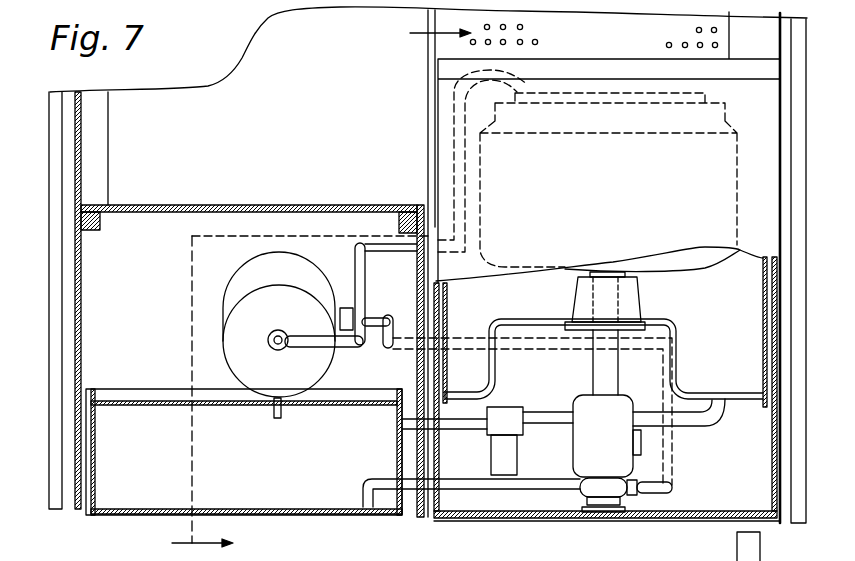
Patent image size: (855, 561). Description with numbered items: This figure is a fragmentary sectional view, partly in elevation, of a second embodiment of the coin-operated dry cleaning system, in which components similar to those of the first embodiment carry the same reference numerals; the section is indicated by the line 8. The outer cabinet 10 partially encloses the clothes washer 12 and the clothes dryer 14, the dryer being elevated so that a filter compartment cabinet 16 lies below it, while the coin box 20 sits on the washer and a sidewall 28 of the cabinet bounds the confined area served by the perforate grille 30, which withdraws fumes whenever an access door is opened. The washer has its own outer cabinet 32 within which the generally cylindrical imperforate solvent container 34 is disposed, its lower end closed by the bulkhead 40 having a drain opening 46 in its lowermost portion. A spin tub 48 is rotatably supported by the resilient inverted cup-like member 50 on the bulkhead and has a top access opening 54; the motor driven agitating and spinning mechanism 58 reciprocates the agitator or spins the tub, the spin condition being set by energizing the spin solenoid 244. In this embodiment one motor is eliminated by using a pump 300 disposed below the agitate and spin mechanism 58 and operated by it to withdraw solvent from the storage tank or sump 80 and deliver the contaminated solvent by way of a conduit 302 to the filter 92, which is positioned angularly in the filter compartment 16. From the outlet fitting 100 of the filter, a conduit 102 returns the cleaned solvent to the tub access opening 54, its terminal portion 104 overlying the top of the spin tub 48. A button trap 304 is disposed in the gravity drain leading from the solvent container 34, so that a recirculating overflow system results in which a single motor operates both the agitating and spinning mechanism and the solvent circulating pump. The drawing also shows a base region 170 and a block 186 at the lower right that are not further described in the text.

The section line 8- 8 is at (307, 288).
The outer cabinet 10 is at (52, 511).
The clothes washer 12 is at (437, 90).
The clothes dryer 14 is at (187, 195).
The filter compartment cabinet 16 is at (78, 511).
The coin box 20 is at (700, 39).
The sidewall 28 is at (789, 488).
The perforate grille 30 is at (452, 45).
The outer cabinet of the washer 32 is at (451, 126).
The solvent container 34 is at (763, 300).
The bulkhead 40 is at (684, 368).
The drain opening 46 is at (726, 403).
The spin tub 48 is at (696, 262).
The resilient inverted cup-like member 50 is at (577, 290).
The top access opening 54 is at (608, 93).
The agitating and spinning mechanism 58 is at (573, 448).
The sump 80 is at (330, 489).
The filter 92 is at (251, 263).
The outlet fitting 100 is at (272, 348).
The conduit 102 is at (373, 245).
The terminal portion 104 is at (528, 84).
The base 170 is at (652, 554).
The caster block 186 is at (760, 552).
The spin solenoid 244 is at (641, 444).
The pump 300 is at (582, 488).
The conduit 302 is at (672, 447).
The button trap 304 is at (513, 407).